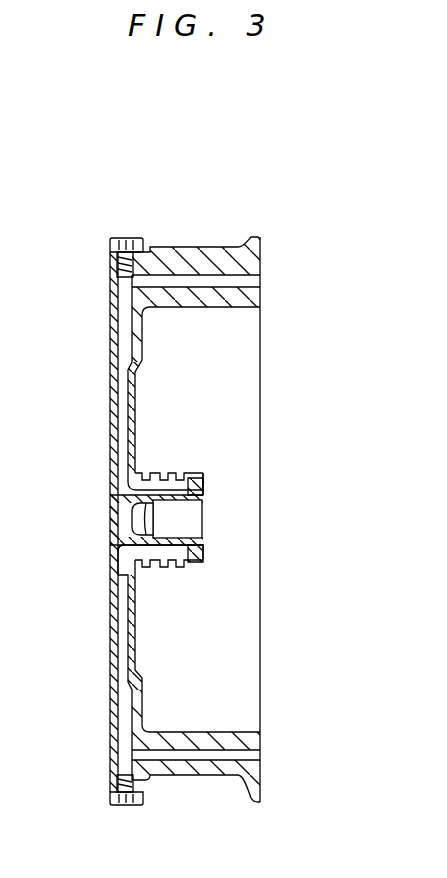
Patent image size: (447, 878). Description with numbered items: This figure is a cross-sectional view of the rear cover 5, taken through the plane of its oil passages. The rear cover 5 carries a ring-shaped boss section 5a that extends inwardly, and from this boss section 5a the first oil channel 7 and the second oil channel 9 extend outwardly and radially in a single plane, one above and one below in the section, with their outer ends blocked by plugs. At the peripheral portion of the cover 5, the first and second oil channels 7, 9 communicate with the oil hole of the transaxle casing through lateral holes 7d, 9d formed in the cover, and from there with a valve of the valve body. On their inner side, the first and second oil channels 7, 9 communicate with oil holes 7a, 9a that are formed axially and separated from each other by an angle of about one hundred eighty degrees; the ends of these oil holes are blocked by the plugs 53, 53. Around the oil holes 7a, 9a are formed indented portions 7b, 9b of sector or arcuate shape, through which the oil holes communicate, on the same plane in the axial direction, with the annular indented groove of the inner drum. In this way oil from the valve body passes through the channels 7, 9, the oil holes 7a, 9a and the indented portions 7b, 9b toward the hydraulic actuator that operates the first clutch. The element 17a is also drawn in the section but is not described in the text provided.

The rear cover 5 is at (173, 521).
The boss section 5a is at (205, 478).
The first oil channel 7 is at (185, 372).
The oil hole 7a is at (183, 473).
The indented portion 7b is at (122, 490).
The lateral hole 7d is at (250, 282).
The second oil channel 9 is at (185, 673).
The oil hole 9a is at (180, 567).
The indented portion 9b is at (158, 566).
The lateral hole 9d is at (247, 757).
The plug 53 is at (205, 485).
The fastening bolt 17a is at (153, 522).